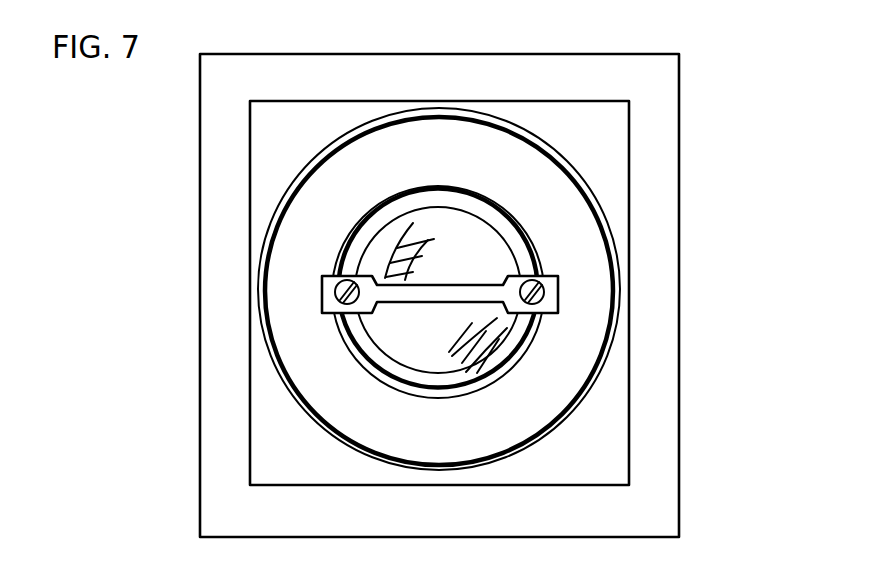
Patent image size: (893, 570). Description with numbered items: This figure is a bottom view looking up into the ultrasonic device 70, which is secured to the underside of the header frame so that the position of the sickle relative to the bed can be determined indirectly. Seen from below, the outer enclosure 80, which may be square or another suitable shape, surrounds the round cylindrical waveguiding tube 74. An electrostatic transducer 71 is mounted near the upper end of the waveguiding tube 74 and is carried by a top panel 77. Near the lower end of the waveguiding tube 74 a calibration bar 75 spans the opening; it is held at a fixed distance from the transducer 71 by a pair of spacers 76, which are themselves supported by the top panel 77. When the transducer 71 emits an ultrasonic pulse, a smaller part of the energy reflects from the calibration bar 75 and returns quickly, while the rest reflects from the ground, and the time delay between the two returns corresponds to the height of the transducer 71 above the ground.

The ultrasonic device 70 is at (708, 84).
The electrostatic transducer 71 is at (455, 278).
The waveguiding tube 74 is at (601, 229).
The calibration bar 75 is at (453, 301).
The spacers 76 is at (339, 304).
The top panel 77 is at (345, 266).
The enclosure 80 is at (670, 257).